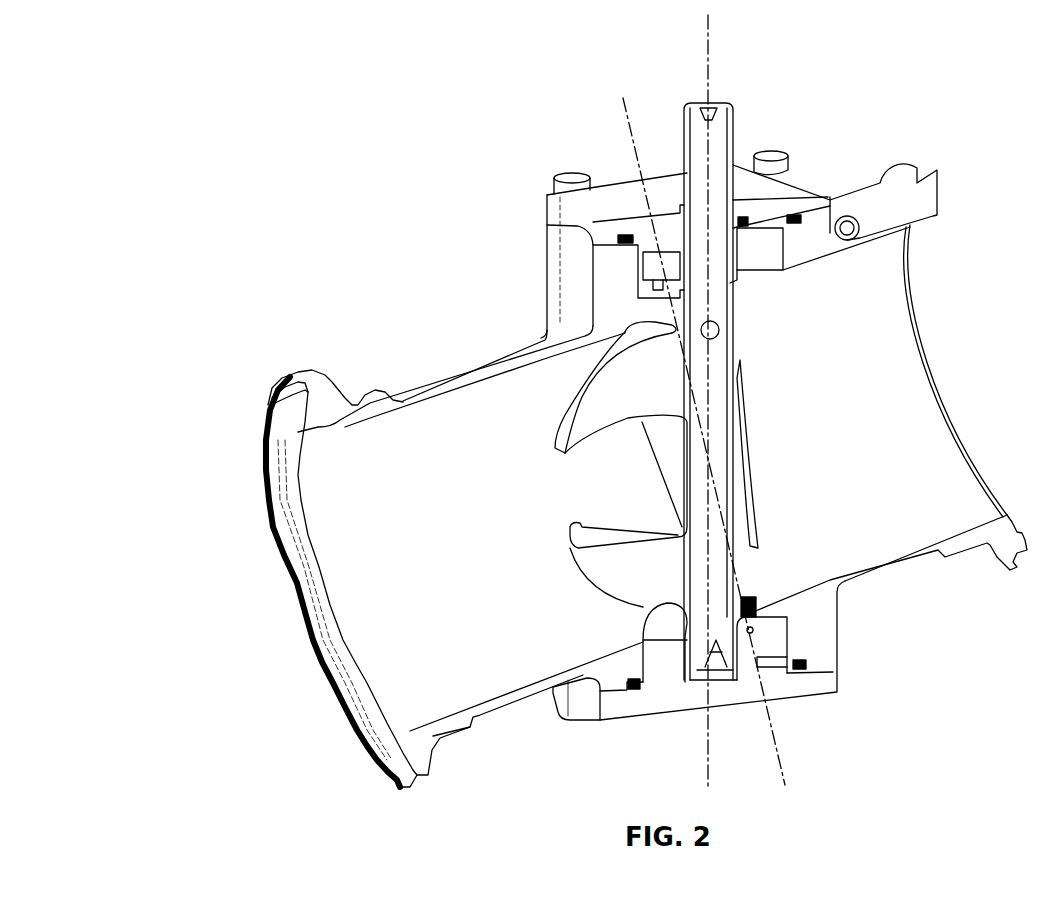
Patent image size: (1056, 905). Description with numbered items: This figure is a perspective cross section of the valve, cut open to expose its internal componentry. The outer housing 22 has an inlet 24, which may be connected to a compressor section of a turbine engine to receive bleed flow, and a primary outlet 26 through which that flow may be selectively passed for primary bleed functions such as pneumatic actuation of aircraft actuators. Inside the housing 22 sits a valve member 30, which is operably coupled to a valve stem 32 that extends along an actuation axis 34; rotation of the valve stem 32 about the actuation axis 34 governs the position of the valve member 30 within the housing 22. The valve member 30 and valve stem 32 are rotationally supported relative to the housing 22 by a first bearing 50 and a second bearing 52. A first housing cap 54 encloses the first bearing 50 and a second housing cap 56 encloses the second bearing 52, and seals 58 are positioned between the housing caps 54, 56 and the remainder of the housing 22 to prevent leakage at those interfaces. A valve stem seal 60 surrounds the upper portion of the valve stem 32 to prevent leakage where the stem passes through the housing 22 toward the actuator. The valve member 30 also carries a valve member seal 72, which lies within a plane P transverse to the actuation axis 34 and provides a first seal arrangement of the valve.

The outer housing 22 is at (493, 368).
The inlet 24 is at (318, 520).
The primary outlet 26 is at (946, 334).
The valve member 30 is at (588, 573).
The valve stem 32 is at (734, 122).
The actuation axis 34 is at (705, 92).
The first bearing 50 is at (767, 255).
The second bearing 52 is at (663, 650).
The first housing cap 54 is at (608, 192).
The second housing cap 56 is at (803, 697).
The seals 58 is at (808, 220).
The valve stem seal 60 is at (748, 220).
The valve member seal 72 is at (743, 313).
The plane P is at (717, 463).